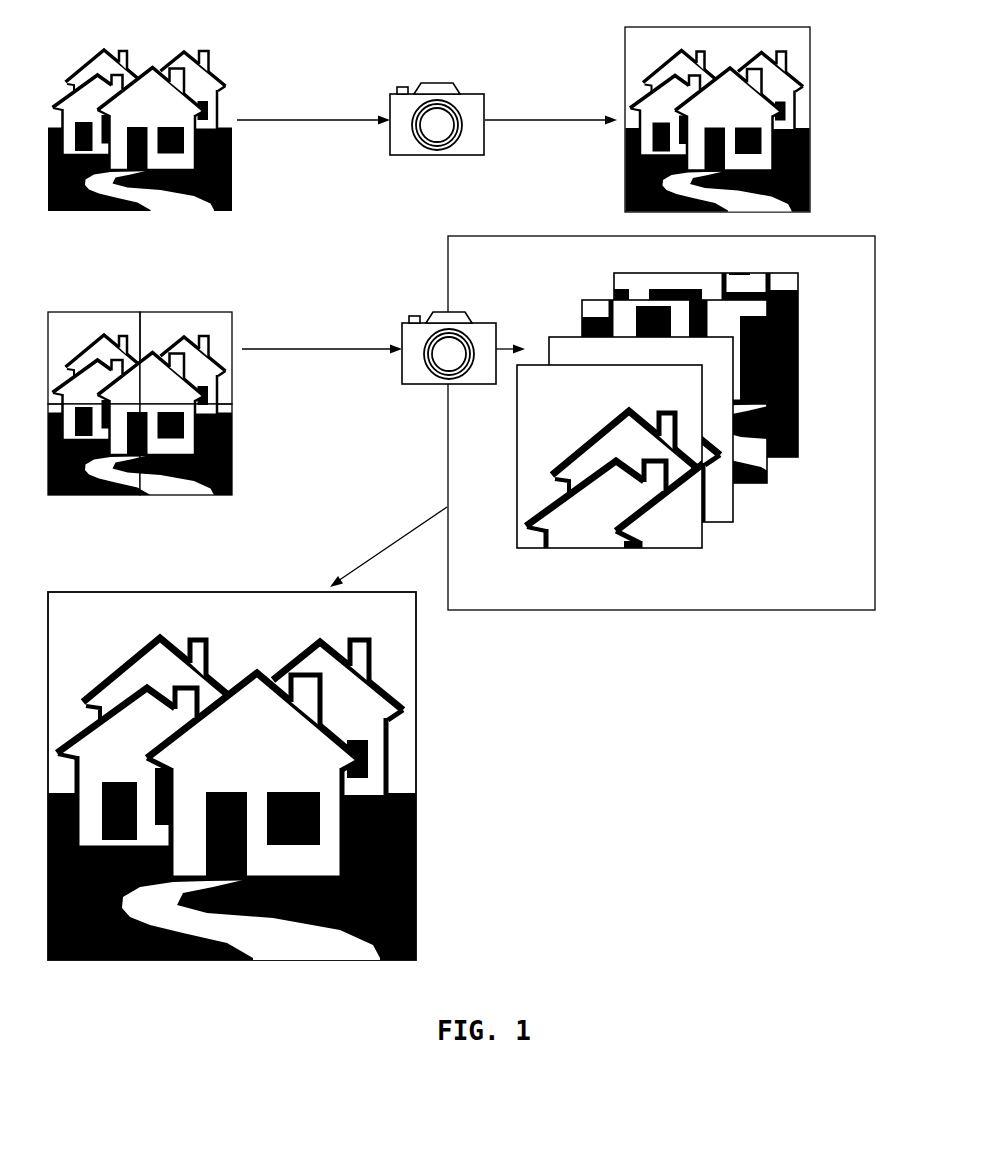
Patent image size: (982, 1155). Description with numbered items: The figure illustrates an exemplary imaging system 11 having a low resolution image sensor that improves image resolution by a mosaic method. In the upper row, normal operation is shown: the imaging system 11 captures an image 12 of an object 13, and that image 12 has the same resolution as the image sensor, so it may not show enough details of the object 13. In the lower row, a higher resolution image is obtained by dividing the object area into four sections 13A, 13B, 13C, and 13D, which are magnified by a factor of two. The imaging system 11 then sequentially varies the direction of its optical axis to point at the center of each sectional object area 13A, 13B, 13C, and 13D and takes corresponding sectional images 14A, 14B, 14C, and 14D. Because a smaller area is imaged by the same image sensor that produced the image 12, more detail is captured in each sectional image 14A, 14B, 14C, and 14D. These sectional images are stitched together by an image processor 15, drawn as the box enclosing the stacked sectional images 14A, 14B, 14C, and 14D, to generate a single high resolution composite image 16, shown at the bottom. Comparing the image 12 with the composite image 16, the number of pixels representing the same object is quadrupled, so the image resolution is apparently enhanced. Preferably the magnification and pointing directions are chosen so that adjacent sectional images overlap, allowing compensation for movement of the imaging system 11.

The imaging system 11 is at (490, 90).
The image 12 is at (815, 92).
The object 13 is at (248, 92).
The sectional object area 13A is at (65, 318).
The sectional object area 13B is at (167, 318).
The sectional object area 13C is at (72, 497).
The sectional object area 13D is at (168, 483).
The sectional image 14A is at (675, 532).
The sectional image 14B is at (718, 500).
The sectional image 14C is at (767, 485).
The sectional image 14D is at (798, 458).
The image processor 15 is at (657, 434).
The high resolution composite image 16 is at (415, 873).